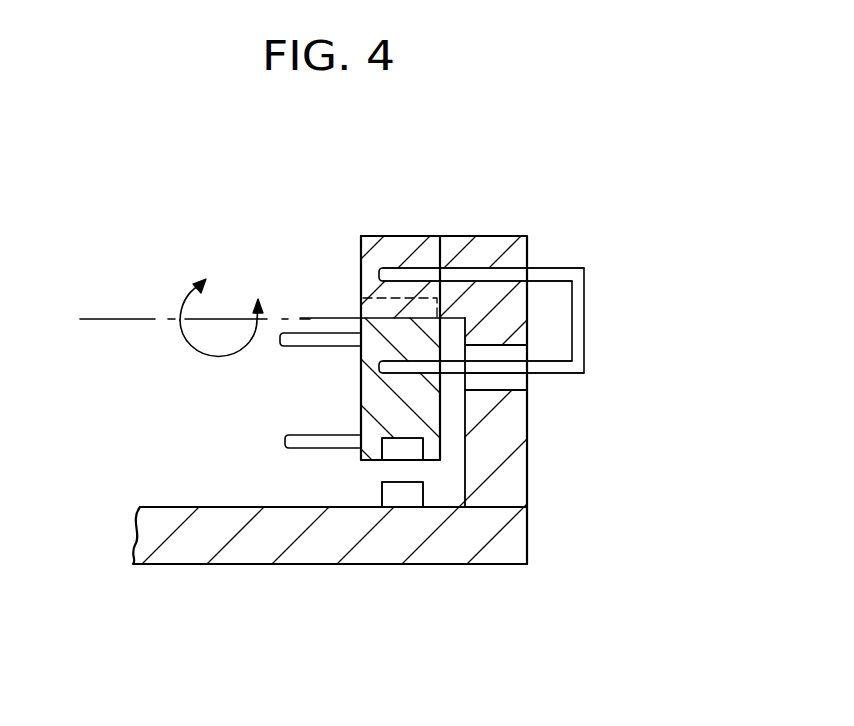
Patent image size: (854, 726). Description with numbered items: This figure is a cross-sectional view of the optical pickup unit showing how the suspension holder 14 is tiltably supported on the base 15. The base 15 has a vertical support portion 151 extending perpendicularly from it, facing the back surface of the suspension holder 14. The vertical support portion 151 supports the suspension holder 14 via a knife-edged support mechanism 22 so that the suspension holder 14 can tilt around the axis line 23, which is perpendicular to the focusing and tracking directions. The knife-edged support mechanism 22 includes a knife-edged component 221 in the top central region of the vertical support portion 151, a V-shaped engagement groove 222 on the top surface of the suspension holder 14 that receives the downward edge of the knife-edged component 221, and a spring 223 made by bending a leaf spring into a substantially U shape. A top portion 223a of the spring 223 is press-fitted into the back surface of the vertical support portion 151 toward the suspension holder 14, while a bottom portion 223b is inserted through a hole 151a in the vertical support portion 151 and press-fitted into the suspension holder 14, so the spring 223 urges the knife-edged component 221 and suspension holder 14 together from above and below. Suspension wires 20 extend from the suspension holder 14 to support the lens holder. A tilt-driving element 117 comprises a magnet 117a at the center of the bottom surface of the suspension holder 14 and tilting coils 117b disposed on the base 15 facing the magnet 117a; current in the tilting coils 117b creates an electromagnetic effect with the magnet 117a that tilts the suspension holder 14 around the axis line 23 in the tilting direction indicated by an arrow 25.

The suspension holder 14 is at (360, 388).
The base 15 is at (263, 545).
The suspension wire 20 is at (299, 333).
The knife-edged support mechanism 22 is at (400, 226).
The axis line 23 is at (110, 319).
The arrow 25 is at (218, 358).
The tilt-driving element 117 is at (666, 477).
The magnet 117a is at (407, 453).
The tilting coils 117b is at (412, 495).
The vertical support portion 151 is at (517, 425).
The hole 151a is at (517, 380).
The knife-edged component 221 is at (370, 236).
The V-shaped engagement groove 222 is at (360, 308).
The spring 223 is at (562, 260).
The top portion 223a is at (492, 268).
The bottom portion 223b is at (547, 360).